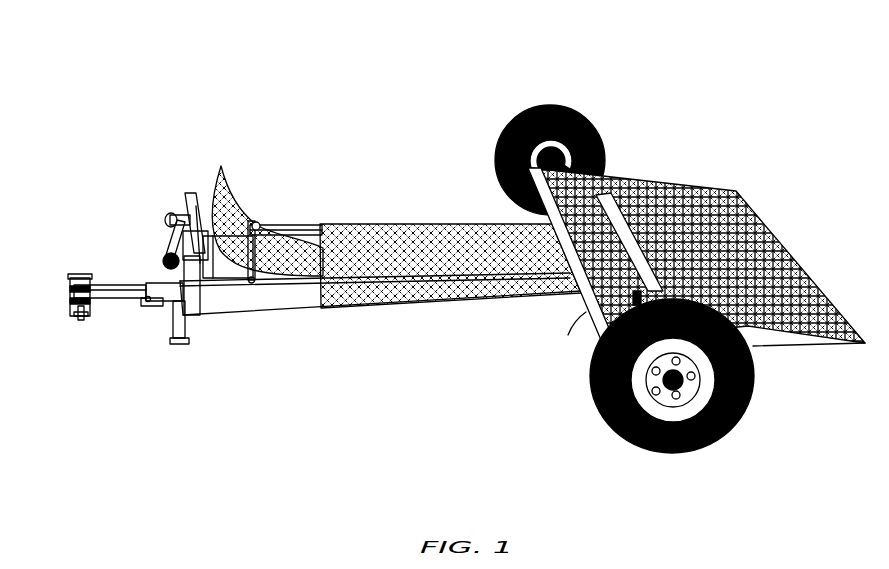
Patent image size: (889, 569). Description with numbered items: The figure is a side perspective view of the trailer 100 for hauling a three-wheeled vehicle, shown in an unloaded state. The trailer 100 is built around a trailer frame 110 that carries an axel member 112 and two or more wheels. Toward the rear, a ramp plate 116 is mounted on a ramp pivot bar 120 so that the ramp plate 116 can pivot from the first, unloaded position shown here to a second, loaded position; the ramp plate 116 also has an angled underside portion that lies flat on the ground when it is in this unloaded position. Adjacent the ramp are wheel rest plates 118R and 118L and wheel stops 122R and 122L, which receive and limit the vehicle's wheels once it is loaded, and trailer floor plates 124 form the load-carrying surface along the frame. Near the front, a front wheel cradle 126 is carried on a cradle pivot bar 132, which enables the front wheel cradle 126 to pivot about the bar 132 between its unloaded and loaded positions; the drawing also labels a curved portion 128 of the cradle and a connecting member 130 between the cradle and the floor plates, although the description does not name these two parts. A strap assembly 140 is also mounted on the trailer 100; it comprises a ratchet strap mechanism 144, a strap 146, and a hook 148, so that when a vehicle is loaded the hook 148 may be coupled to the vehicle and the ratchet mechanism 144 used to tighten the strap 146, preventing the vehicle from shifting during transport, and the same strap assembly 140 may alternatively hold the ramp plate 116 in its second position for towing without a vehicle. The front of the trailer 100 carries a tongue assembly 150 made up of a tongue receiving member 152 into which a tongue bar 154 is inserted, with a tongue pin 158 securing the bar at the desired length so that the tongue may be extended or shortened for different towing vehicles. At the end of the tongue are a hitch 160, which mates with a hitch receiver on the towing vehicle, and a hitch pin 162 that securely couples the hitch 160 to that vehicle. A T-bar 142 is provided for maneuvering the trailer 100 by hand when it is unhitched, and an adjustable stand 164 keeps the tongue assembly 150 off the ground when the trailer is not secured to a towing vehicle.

The trailer 100 is at (282, 54).
The trailer frame 110 is at (281, 303).
The axel member 112 is at (575, 295).
The ramp plate 116 is at (667, 177).
The wheel rest plate 118R is at (573, 197).
The wheel rest plate 118L is at (627, 270).
The ramp pivot bar 120 is at (607, 186).
The wheel stop 122R is at (505, 190).
The wheel stop 122L is at (580, 312).
The trailer floor plates 124 is at (393, 215).
The front wheel cradle 126 is at (234, 204).
The curved blade 128 is at (206, 178).
The connecting rod 130 is at (294, 216).
The cradle pivot bar 132 is at (236, 278).
The strap assembly 140 is at (161, 194).
The T-bar 142 is at (180, 184).
The ratchet strap mechanism 144 is at (158, 242).
The strap 146 is at (160, 207).
The hook 148 is at (158, 218).
The tongue assembly 150 is at (82, 258).
The tongue receiving member 152 is at (150, 275).
The tongue bar 154 is at (118, 276).
The tongue pin 158 is at (138, 299).
The hitch 160 is at (66, 303).
The hitch pin 162 is at (62, 270).
The adjustable stand 164 is at (172, 337).